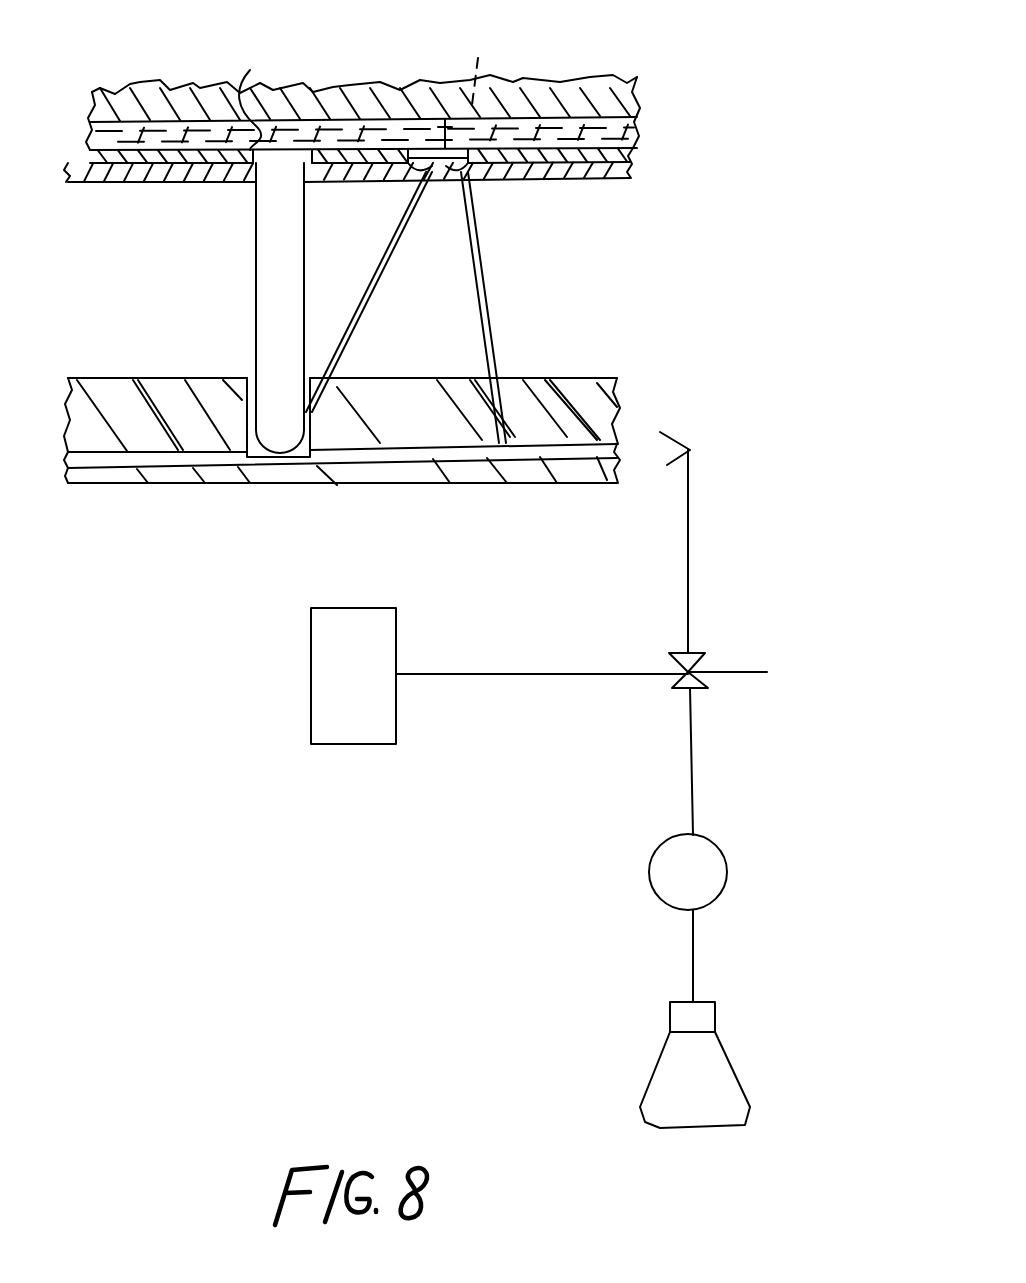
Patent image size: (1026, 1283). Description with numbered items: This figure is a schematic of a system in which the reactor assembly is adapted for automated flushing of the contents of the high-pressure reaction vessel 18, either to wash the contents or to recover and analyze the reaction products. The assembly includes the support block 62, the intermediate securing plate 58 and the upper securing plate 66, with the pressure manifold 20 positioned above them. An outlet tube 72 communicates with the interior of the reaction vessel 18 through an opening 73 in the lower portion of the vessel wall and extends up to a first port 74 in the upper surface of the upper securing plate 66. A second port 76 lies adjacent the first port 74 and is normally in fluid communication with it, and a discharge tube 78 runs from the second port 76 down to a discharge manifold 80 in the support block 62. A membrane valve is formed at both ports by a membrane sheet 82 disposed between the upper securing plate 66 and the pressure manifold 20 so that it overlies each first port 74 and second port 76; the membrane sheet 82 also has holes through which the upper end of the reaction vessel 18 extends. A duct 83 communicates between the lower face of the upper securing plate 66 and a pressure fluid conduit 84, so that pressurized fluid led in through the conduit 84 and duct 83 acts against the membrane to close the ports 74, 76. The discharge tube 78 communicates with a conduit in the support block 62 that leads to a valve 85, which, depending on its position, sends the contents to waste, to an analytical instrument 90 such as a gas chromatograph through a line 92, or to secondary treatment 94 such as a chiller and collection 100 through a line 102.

The high-pressure reaction vessel 18 is at (256, 290).
The pressure manifold 20 is at (622, 102).
The intermediate securing plate 58 is at (112, 178).
The support block 62 is at (590, 378).
The upper securing plate 66 is at (378, 112).
The outlet tube 72 is at (372, 300).
The opening 73 is at (327, 440).
The first port 74 is at (432, 178).
The second port 76 is at (480, 172).
The discharge tube 78 is at (498, 352).
The discharge manifold 80 is at (617, 443).
The membrane sheet 82 is at (625, 180).
The duct 83 is at (471, 66).
The pressure fluid conduit 84 is at (100, 92).
The valve 85 is at (705, 662).
The analytical instrument 90 is at (364, 690).
The line 92 is at (480, 675).
The secondary treatment 94 is at (701, 890).
The collection 100 is at (712, 1091).
The line 102 is at (694, 772).